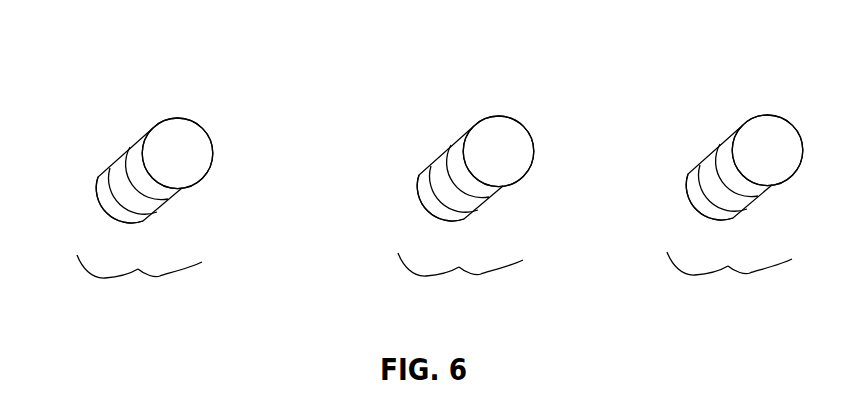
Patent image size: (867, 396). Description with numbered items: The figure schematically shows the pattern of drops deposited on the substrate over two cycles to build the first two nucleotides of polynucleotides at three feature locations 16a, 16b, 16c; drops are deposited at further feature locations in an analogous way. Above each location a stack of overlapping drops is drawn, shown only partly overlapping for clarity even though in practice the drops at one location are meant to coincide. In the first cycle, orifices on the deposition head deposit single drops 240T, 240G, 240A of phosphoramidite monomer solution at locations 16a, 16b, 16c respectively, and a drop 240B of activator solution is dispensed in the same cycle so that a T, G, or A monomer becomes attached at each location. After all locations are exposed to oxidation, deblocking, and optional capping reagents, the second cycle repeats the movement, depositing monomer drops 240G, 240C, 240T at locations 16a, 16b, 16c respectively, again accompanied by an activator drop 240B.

The drop of activator solution 240B is at (128, 148).
The drop of G phosphoramidite monomer solution 240G is at (93, 197).
The drop of T phosphoramidite monomer solution 240T is at (157, 124).
The drop of C phosphoramidite monomer solution 240C is at (473, 100).
The drop of A phosphoramidite monomer solution 240A is at (672, 159).
The feature location 16a is at (130, 276).
The feature location 16b is at (460, 278).
The feature location 16c is at (729, 277).